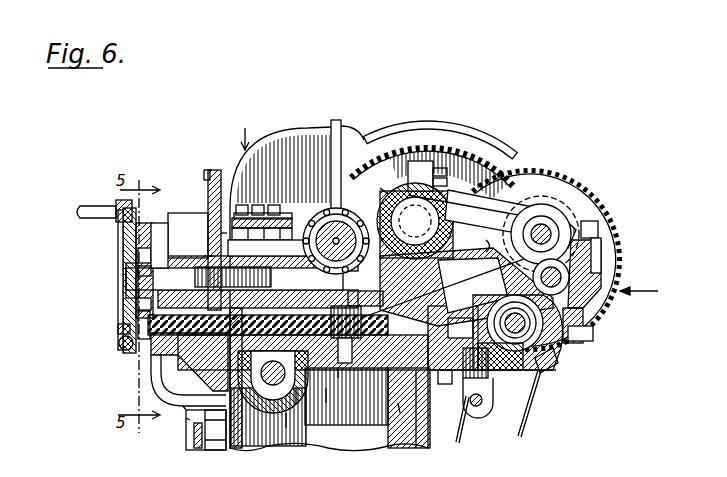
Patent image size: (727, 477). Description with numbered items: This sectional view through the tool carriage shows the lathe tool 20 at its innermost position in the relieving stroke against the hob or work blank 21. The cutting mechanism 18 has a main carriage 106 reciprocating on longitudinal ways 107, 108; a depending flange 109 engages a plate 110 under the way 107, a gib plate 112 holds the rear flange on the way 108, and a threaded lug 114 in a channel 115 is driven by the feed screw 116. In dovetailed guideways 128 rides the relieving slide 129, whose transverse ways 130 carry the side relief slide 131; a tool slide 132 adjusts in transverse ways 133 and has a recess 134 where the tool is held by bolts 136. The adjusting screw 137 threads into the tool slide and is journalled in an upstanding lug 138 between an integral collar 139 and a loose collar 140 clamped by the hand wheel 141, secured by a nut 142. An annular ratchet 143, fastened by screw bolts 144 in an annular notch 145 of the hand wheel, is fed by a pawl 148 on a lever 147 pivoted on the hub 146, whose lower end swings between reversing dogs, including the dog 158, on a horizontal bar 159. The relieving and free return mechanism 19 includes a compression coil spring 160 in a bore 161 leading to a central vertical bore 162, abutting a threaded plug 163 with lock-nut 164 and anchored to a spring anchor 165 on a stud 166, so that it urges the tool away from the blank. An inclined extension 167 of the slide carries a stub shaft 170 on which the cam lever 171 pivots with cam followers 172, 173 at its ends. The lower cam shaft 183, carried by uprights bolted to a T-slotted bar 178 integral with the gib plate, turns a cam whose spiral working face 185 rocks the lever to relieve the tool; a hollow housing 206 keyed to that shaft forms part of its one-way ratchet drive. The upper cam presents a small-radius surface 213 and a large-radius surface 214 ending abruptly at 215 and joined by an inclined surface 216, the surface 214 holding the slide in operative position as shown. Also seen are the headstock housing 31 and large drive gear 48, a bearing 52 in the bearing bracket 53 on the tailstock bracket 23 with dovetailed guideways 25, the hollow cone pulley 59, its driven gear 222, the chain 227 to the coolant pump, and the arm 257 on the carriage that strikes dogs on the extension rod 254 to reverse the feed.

The cutting mechanism 18 is at (245, 129).
The relieving and free return mechanism 19 is at (644, 292).
The lathe tool 20 is at (300, 215).
The work blank 21 is at (338, 210).
The tailstock bracket 23 is at (427, 176).
The dovetailed guideways 25 is at (372, 180).
The headstock housing 31 is at (300, 124).
The large drive gear 48 is at (374, 136).
The bearing 52 is at (455, 188).
The bearing bracket 53 is at (500, 190).
The hollow cone pulley 59 is at (465, 125).
The main carriage 106 is at (365, 365).
The longitudinal way 107 is at (245, 395).
The longitudinal way 108 is at (405, 420).
The depending flange 109 is at (176, 399).
The plate 110 is at (180, 412).
The gib plate 112 is at (440, 365).
The threaded lug 114 is at (268, 405).
The channel 115 is at (278, 420).
The feed screw 116 is at (262, 400).
The dovetailed guideways 128 is at (380, 388).
The relieving slide 129 is at (390, 400).
The transverse ways 130 is at (203, 248).
The side relief slide 131 is at (269, 248).
The tool slide 132 is at (262, 241).
The transverse ways 133 is at (415, 221).
The recess 134 is at (281, 200).
The bolts 136 is at (266, 192).
The adjusting screw 137 is at (212, 210).
The upstanding lug 138 is at (183, 220).
The collar 139 is at (212, 230).
The collar 140 is at (160, 236).
The hand wheel 141 is at (110, 200).
The nut 142 is at (120, 272).
The ratchet 143 is at (147, 215).
The screw bolts 144 is at (118, 238).
The annular notch 145 is at (125, 255).
The hub 146 is at (143, 255).
The lever 147 is at (140, 370).
The pawl 148 is at (110, 321).
The reversing dog 158 is at (180, 440).
The horizontal bar 159 is at (200, 443).
The compression coil spring 160 is at (288, 395).
The bore 161 is at (318, 395).
The central vertical bore 162 is at (345, 356).
The threaded plug 163 is at (111, 337).
The lock-nut 164 is at (170, 360).
The spring anchor 165 is at (372, 303).
The stud 166 is at (330, 370).
The extension 167 is at (462, 252).
The stub shaft 170 is at (561, 272).
The cam lever 171 is at (592, 238).
The cam follower 172 is at (592, 222).
The cam follower 173 is at (562, 332).
The bar 178 is at (455, 390).
The lower cam shaft 183 is at (540, 345).
The spiral working face 185 is at (500, 360).
The hollow cylindrical housing 206 is at (540, 370).
The arcuate cam surface 213 is at (516, 200).
The arcuate cam surface 214 is at (556, 216).
The abrupt termination 215 is at (540, 212).
The inclined surface 216 is at (480, 232).
The gear 222 is at (567, 166).
The chain 227 is at (455, 428).
The extension rod 254 is at (472, 398).
The arm 257 is at (515, 392).